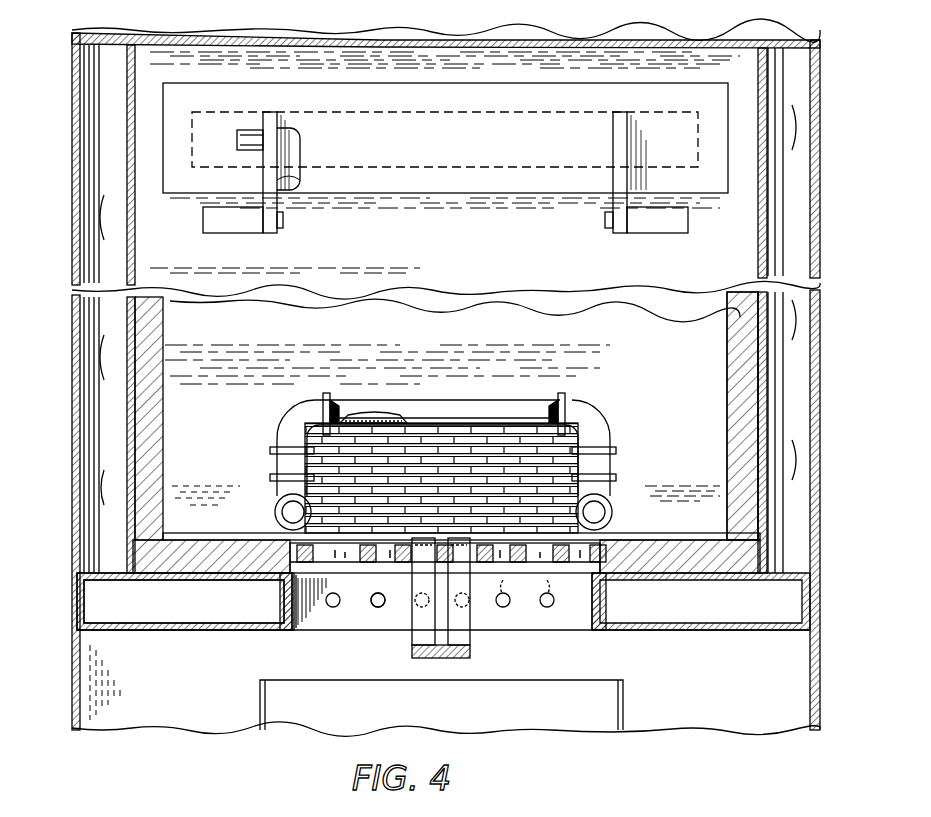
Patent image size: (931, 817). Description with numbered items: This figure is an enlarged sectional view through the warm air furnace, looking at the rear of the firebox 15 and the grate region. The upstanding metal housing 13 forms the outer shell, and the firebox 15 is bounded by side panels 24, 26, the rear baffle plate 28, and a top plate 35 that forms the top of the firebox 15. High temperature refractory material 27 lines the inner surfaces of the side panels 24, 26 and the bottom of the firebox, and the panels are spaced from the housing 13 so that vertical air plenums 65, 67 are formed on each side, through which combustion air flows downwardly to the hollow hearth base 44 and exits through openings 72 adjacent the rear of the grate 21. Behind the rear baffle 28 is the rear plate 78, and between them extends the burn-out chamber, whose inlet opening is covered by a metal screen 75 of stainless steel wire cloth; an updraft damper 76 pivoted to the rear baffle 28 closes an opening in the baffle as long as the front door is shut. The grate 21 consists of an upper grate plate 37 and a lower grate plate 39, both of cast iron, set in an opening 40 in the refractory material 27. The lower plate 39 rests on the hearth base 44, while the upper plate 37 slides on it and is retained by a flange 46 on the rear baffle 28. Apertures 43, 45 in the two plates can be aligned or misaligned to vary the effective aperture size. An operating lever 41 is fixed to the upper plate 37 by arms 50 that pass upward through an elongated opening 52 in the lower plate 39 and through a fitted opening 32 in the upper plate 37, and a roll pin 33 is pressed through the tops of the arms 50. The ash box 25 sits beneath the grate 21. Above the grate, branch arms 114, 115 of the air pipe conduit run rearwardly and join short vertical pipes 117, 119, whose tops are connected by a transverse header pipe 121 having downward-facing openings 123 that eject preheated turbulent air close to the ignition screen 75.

The top plate 35 is at (604, 41).
The metal housing 13 is at (818, 128).
The vertical air plenum 65 is at (110, 181).
The rear plate 78 is at (298, 155).
The updraft damper 76 is at (418, 183).
The rear baffle plate 28 is at (663, 315).
The vertical air plenum 67 is at (801, 316).
The side panel 24 is at (128, 313).
The refractory material 27 is at (150, 366).
The firebox 15 is at (318, 343).
The openings 123 is at (363, 427).
The transverse header pipe 121 is at (473, 405).
The apertures 43 is at (493, 550).
The metal screen 75 is at (577, 421).
The vertical pipe 119 is at (612, 460).
The branch arm 115 is at (727, 435).
The side panel 26 is at (614, 501).
The vertical pipe 117 is at (277, 462).
The flange 46 is at (195, 540).
The grate 21 is at (617, 530).
The opening 40 is at (603, 571).
The branch arm 114 is at (280, 541).
The upper grate plate 37 is at (253, 581).
The hearth base 44 is at (120, 633).
The lower grate plate 39 is at (312, 578).
The roll pin 33 is at (364, 569).
The fitted opening 32 is at (383, 603).
The openings 72 is at (378, 607).
The elongated opening 52 is at (418, 576).
The arms 50 is at (420, 653).
The operating lever 41 is at (417, 632).
The apertures 45 is at (528, 567).
The ash box 25 is at (605, 704).